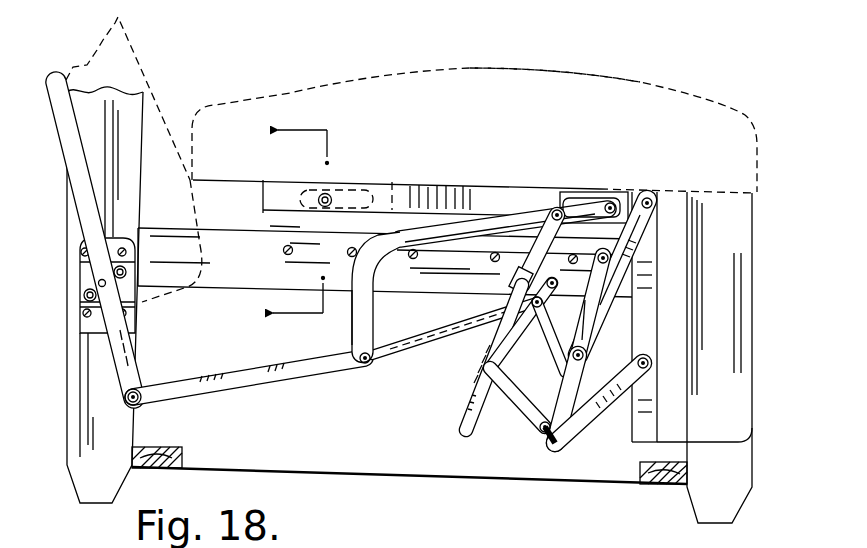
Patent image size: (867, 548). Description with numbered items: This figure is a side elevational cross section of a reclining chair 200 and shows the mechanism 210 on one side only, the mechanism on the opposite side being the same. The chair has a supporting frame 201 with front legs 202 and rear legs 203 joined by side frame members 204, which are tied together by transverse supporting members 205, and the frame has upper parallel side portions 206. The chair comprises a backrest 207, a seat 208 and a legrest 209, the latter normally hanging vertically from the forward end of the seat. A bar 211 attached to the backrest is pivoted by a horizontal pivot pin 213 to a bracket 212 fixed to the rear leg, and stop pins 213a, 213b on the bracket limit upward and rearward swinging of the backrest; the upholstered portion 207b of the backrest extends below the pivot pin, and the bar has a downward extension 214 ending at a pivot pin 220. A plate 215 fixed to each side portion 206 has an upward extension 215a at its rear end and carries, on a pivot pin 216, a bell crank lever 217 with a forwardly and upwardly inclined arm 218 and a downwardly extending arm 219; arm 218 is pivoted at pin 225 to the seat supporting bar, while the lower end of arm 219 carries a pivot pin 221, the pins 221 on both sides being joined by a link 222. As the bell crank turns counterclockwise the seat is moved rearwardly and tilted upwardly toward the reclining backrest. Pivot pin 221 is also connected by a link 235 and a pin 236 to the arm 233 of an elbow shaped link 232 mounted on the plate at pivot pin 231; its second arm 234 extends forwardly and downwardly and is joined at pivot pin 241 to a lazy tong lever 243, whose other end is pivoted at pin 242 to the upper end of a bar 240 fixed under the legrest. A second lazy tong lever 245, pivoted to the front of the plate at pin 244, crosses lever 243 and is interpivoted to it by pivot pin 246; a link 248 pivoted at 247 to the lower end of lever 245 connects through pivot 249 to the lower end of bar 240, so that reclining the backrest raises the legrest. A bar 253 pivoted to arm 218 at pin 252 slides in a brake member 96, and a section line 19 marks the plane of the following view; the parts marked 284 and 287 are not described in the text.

The section line 19 is at (288, 222).
The brake member 96 is at (518, 278).
The chair 200 is at (327, 40).
The supporting frame 201 is at (55, 456).
The front legs 202 is at (740, 405).
The rear legs 203 is at (67, 390).
The side frame members 204 is at (376, 462).
The transverse supporting members 205 is at (182, 455).
The upper parallel side portions 206 is at (233, 277).
The backrest 207 is at (146, 60).
The upholstered portion 207b is at (168, 117).
The seat 208 is at (510, 80).
The legrest 209 is at (717, 317).
The mechanism 210 is at (342, 380).
The bar 211 is at (73, 163).
The bracket 212 is at (83, 272).
The pivot pin 213 is at (98, 283).
The stop pin 213a is at (124, 270).
The stop pin 213b is at (84, 298).
The downward extension 214 is at (127, 368).
The plate 215 is at (433, 284).
The upward extension 215a is at (270, 226).
The pivot pin 216 is at (374, 243).
The bell crank lever 217 is at (349, 328).
The arm 218 is at (502, 220).
The arm 219 is at (352, 340).
The pivot pin 220 is at (138, 389).
The pivot pin 221 is at (370, 367).
The link 222 is at (267, 381).
The pivot pin 225 is at (611, 200).
The pivot pin 231 is at (553, 290).
The elbow shaped link 232 is at (519, 419).
The arm 233 is at (524, 333).
The arm 234 is at (537, 420).
The link 235 is at (447, 338).
The pin 236 is at (539, 308).
The bar 240 is at (645, 428).
The pivot pin 241 is at (546, 433).
The pivot pin 242 is at (648, 197).
The lazy tong lever 243 is at (640, 230).
The pivot pin 244 is at (613, 240).
The lazy tong lever 245 is at (584, 356).
The pivot pin 246 is at (600, 348).
The pivot 247 is at (560, 452).
The link 248 is at (615, 407).
The pivot 249 is at (649, 362).
The pivot pin 252 is at (558, 209).
The bar 253 is at (478, 412).
The upper rail 284 is at (460, 193).
The slide block 287 is at (362, 188).